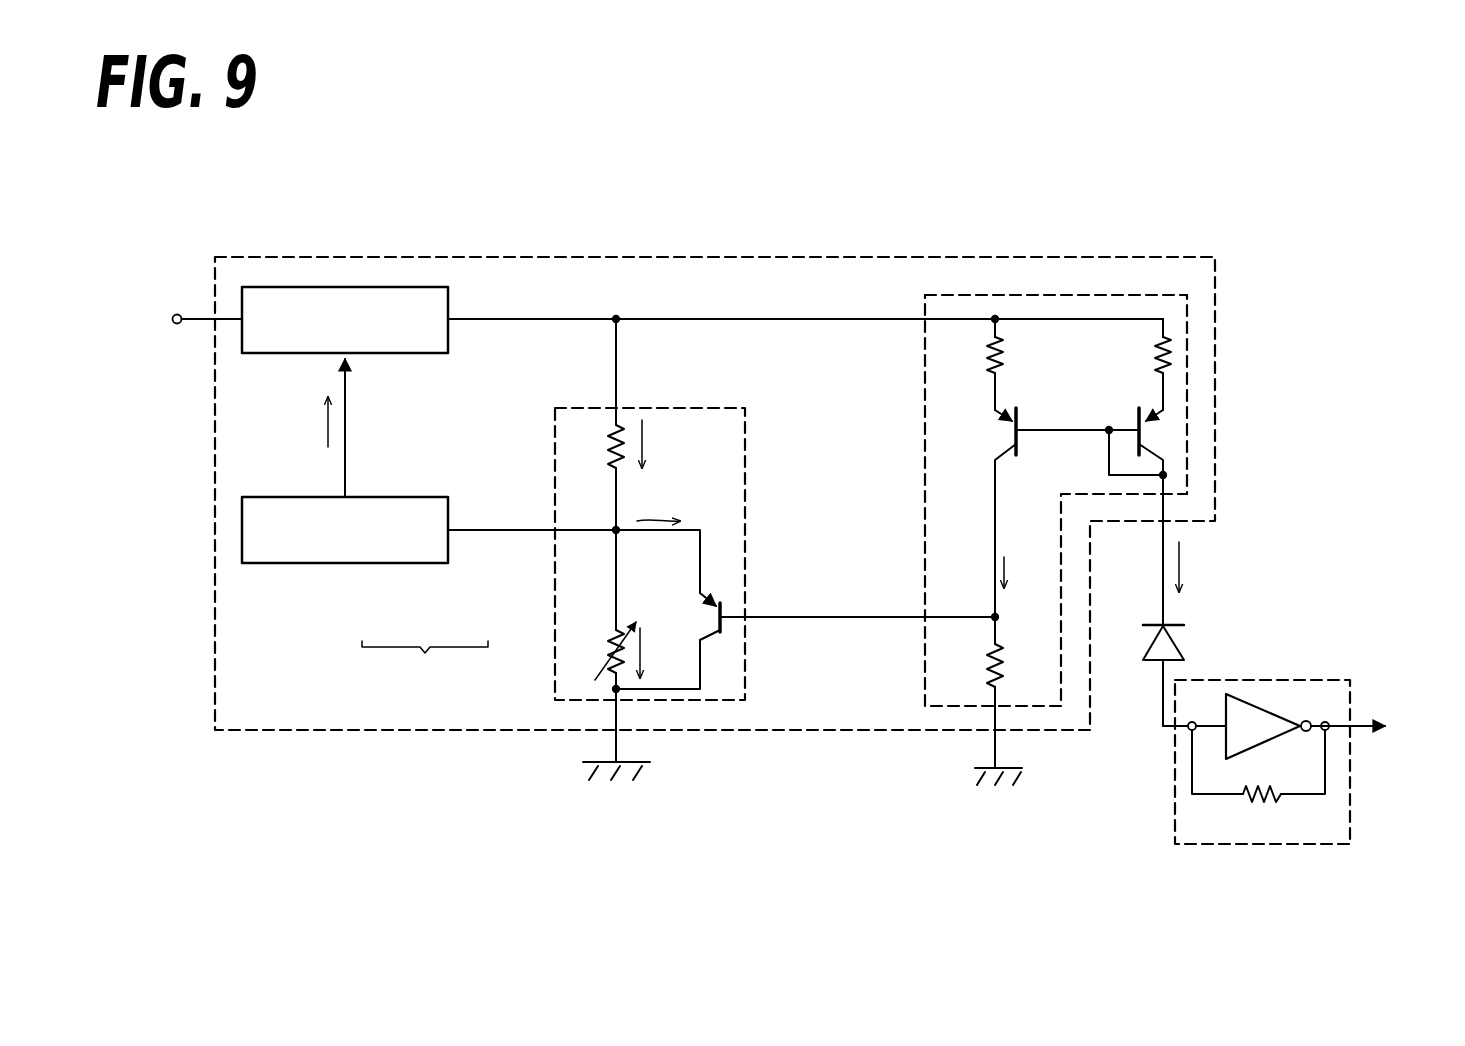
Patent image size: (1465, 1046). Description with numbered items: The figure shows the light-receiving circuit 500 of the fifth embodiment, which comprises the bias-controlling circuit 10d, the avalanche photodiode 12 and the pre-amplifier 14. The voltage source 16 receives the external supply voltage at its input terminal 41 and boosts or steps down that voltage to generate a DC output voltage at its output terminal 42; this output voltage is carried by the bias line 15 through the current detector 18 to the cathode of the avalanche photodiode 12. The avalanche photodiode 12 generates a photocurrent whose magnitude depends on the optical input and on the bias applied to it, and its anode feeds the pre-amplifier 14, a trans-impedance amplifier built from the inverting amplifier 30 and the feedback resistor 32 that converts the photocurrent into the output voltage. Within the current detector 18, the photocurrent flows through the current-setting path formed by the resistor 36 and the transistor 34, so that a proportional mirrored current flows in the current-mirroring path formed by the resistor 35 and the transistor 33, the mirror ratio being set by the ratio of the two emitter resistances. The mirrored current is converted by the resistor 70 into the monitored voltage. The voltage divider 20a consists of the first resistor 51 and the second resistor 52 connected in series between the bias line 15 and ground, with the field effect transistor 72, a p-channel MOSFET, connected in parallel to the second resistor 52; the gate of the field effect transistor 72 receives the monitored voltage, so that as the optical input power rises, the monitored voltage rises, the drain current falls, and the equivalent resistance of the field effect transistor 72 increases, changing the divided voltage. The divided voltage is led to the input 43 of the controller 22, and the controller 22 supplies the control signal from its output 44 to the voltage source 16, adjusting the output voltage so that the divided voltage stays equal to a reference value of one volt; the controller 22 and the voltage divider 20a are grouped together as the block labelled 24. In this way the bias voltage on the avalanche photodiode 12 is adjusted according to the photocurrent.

The light-receiving circuit 500 is at (1300, 240).
The bias-controlling circuit 10d is at (1065, 249).
The input terminal 41 is at (176, 314).
The voltage source 16 is at (345, 287).
The output terminal 42 is at (452, 330).
The bias line 15 is at (794, 318).
The output 44 is at (352, 493).
The controller 22 is at (378, 565).
The input 43 is at (455, 527).
The control unit 24 is at (425, 669).
The voltage divider 20a is at (553, 591).
The first resistor 51 is at (657, 553).
The second resistor 52 is at (608, 672).
The field effect transistor 72 is at (725, 605).
The current detector 18 is at (1192, 374).
The resistor 35 is at (990, 343).
The resistor 36 is at (1170, 347).
The transistor 33 is at (1018, 452).
The transistor 34 is at (1137, 421).
The resistor 70 is at (1004, 647).
The avalanche photodiode 12 is at (1172, 648).
The pre-amplifier 14 is at (1354, 798).
The inverting amplifier 30 is at (1252, 712).
The feedback resistor 32 is at (1252, 800).